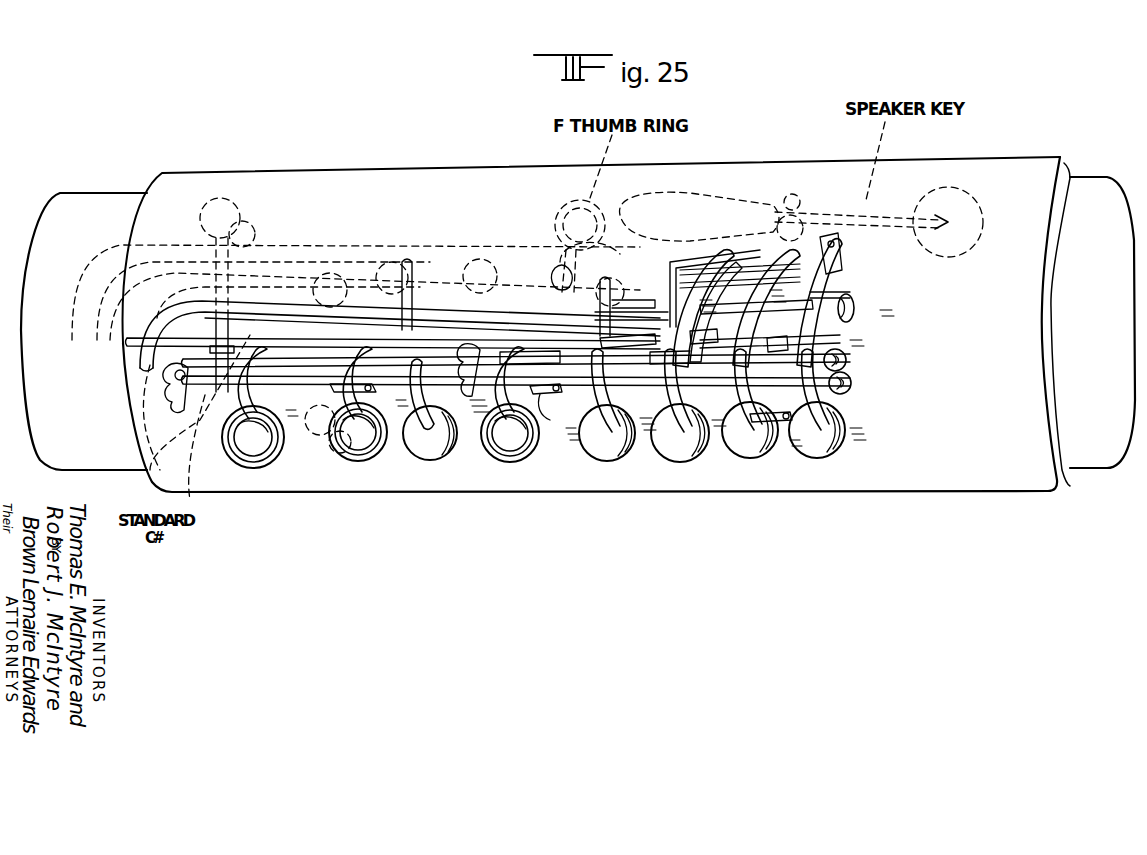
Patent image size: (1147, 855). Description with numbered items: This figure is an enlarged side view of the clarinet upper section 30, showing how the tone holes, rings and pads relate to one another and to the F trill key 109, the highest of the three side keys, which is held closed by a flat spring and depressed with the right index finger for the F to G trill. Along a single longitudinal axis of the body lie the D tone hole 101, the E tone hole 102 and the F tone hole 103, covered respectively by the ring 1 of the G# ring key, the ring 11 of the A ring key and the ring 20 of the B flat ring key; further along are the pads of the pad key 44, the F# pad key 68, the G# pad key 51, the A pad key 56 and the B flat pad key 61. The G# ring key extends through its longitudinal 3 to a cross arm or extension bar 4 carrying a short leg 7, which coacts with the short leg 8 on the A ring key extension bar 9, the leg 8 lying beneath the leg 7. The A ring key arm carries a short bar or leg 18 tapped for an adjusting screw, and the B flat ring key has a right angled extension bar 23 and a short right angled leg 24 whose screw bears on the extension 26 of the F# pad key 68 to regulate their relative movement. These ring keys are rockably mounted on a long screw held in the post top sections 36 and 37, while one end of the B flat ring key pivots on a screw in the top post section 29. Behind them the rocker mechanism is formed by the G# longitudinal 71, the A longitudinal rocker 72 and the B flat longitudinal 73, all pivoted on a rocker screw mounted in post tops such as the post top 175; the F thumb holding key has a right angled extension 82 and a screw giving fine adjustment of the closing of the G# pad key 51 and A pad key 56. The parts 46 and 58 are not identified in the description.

The ring 1 is at (252, 444).
The longitudinal 3 is at (294, 341).
The cross arm or extension bar 4 is at (697, 264).
The short leg 7 is at (728, 262).
The short leg 8 is at (741, 300).
The extension bar 9 is at (770, 274).
The ring 11 is at (380, 440).
The short bar or leg 18 is at (340, 394).
The ring 20 is at (520, 442).
The right angled extension bar 23 is at (830, 266).
The short right angled leg 24 is at (540, 396).
The extension 26 is at (550, 422).
The top post section 29 is at (851, 380).
The upper section 30 is at (1030, 477).
The post top section 36 is at (466, 344).
The post top section 37 is at (194, 400).
The pad key 44 is at (440, 462).
The key arm 46 is at (398, 396).
The G# pad key 51 is at (676, 462).
The A pad key 56 is at (752, 420).
The bracket 58 is at (772, 424).
The B flat pad key 61 is at (820, 460).
The F# pad key 68 is at (604, 462).
The longitudinal 71 is at (706, 343).
The longitudinal rocker 72 is at (776, 352).
The longitudinal 73 is at (843, 352).
The right angled extension 82 is at (668, 282).
The D tone hole 101 is at (262, 418).
The E tone hole 102 is at (394, 438).
The F tone hole 103 is at (524, 453).
The F trill key 109 is at (462, 218).
The post top 175 is at (857, 304).